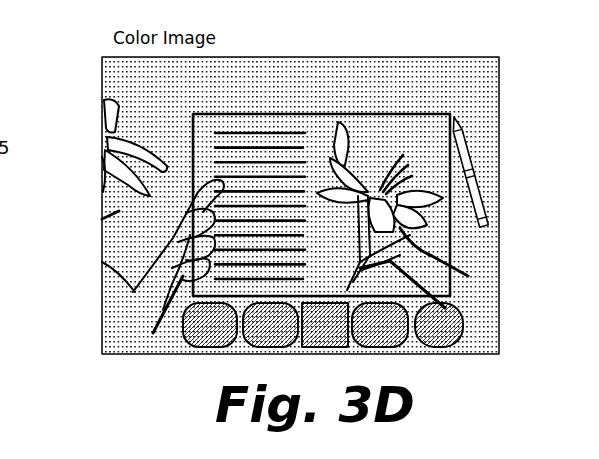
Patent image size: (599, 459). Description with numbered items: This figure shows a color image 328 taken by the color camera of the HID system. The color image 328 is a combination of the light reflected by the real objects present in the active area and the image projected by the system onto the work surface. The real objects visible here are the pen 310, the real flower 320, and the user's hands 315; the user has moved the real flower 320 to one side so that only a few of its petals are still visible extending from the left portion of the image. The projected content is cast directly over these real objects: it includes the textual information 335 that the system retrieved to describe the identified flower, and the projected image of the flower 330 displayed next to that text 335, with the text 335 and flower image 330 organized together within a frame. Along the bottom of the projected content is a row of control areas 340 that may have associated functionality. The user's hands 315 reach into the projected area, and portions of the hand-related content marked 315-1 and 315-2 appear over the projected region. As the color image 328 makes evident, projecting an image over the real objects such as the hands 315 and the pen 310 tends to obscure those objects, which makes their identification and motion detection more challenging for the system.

The pen 310 is at (475, 163).
The user's hands 315 is at (436, 115).
The first gesture stroke 315-1 is at (133, 288).
The second gesture stroke 315-2 is at (452, 263).
The flower 320 is at (102, 115).
The color image 328 is at (527, 82).
The image of the flower 330 is at (372, 158).
The textual information 335 is at (262, 132).
The control areas 340 is at (193, 333).